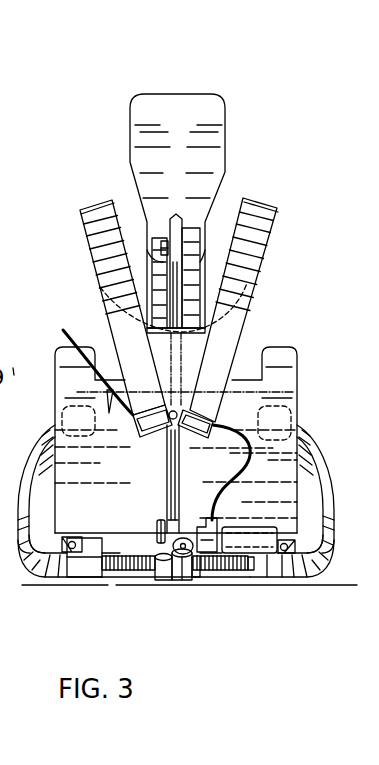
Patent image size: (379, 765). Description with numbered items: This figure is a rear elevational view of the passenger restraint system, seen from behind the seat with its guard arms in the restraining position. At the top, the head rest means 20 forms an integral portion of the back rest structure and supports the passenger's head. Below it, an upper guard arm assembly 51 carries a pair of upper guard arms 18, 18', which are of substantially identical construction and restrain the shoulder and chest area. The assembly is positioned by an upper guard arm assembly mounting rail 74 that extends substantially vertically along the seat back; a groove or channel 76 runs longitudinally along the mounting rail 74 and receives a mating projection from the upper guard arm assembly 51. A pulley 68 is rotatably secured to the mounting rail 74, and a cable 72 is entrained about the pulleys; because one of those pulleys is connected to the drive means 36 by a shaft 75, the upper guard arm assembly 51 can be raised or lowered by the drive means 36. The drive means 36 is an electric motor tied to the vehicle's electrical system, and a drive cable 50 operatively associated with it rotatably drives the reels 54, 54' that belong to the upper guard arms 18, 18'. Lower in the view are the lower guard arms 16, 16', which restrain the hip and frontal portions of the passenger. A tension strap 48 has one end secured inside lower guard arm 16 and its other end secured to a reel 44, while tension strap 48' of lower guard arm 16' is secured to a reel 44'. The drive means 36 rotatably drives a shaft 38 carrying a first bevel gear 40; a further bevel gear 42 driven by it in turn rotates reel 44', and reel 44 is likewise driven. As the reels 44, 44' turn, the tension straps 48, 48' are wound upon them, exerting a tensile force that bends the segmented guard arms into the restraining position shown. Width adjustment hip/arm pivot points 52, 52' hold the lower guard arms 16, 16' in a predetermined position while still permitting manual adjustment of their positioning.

The head rest means 20 is at (191, 141).
The upper guard arm assembly mounting rail 74 is at (179, 219).
The pulley 68 is at (163, 241).
The upper guard arm 18 is at (102, 307).
The upper guard arm 18' is at (244, 304).
The upper guard arm assembly 51 is at (134, 441).
The drive cable 50 is at (253, 470).
The reel 54 is at (86, 361).
The reel 54' is at (283, 435).
The groove or channel 76 is at (172, 465).
The cable 72 is at (167, 496).
The lower guard arm 16 is at (63, 493).
The lower guard arm 16' is at (234, 501).
The width adjustment hip/arm pivot point 52 is at (83, 540).
The width adjustment hip/arm pivot point 52' is at (317, 581).
The drive means 36 is at (257, 535).
The shaft 75 is at (192, 522).
The tension strap 48 is at (128, 586).
The tension strap 48' is at (223, 589).
The shaft 38 is at (193, 587).
The first bevel gear 40 is at (198, 583).
The further bevel gear 42 is at (162, 583).
The reel 44 is at (151, 606).
The reel 44' is at (175, 617).